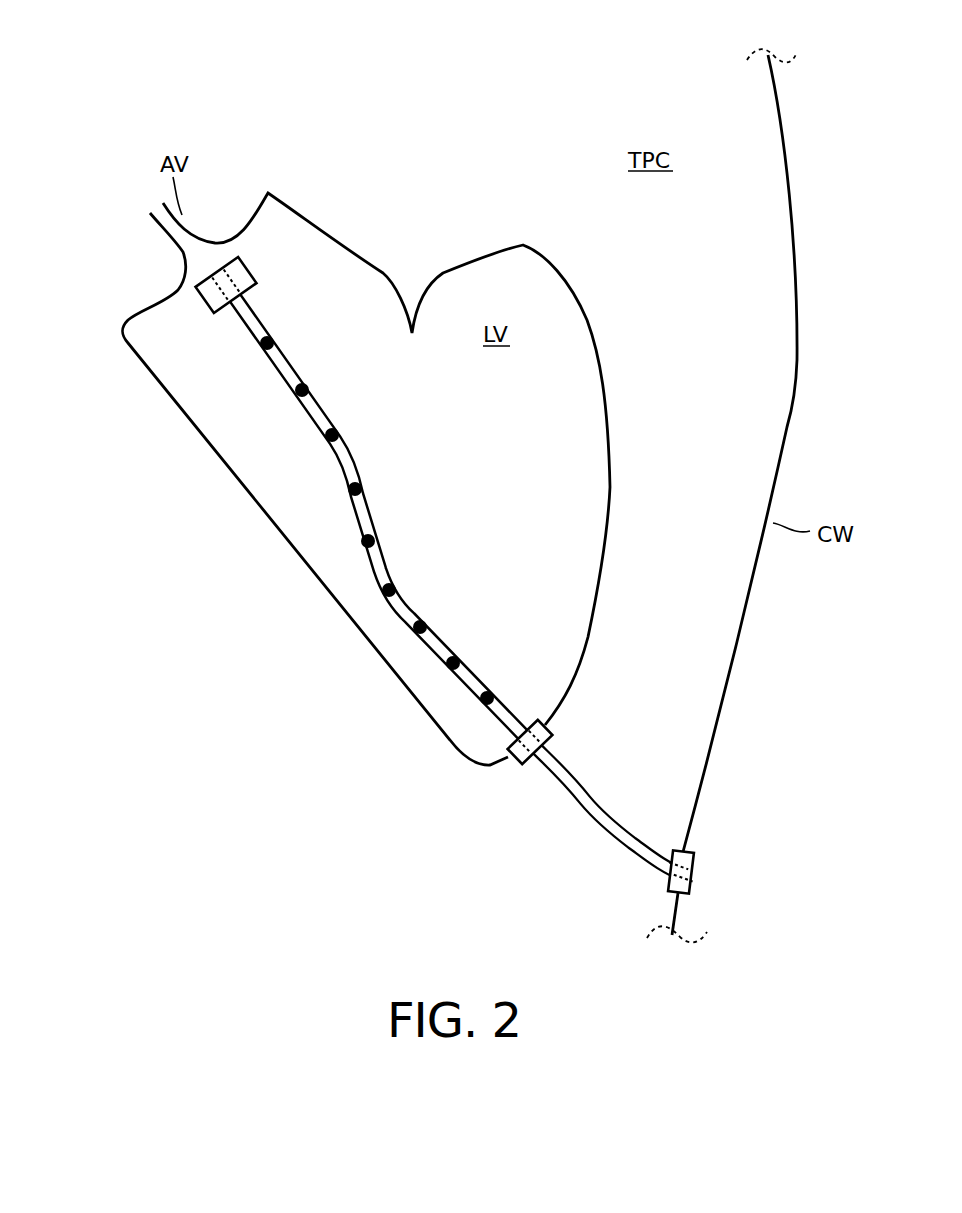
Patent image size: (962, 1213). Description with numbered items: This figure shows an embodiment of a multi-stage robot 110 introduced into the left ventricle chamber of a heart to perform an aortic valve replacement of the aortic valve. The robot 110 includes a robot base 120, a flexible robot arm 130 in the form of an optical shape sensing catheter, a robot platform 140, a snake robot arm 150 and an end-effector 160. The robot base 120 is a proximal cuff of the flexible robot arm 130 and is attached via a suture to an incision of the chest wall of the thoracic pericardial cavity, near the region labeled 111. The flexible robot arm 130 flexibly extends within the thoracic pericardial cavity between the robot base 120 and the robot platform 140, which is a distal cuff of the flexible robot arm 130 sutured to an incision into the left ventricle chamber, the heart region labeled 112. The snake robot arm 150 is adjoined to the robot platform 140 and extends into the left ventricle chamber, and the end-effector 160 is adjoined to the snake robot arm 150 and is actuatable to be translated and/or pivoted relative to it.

The multi-stage robot 110 is at (134, 84).
The patient body / chest wall entry 111 is at (738, 926).
The heart 112 is at (228, 352).
The robot base 120 is at (693, 873).
The flexible robot arm 130 is at (618, 815).
The robot platform 140 is at (518, 763).
The snake robot arm 150 is at (355, 453).
The end-effector 160 is at (243, 267).